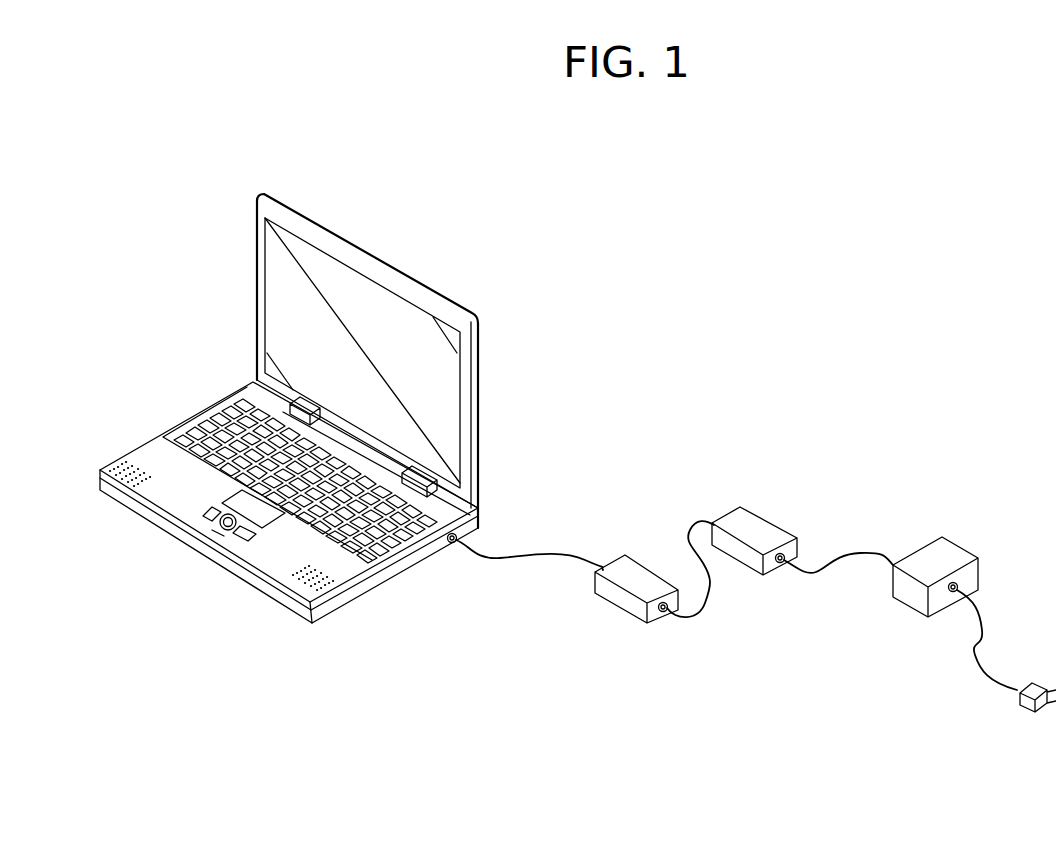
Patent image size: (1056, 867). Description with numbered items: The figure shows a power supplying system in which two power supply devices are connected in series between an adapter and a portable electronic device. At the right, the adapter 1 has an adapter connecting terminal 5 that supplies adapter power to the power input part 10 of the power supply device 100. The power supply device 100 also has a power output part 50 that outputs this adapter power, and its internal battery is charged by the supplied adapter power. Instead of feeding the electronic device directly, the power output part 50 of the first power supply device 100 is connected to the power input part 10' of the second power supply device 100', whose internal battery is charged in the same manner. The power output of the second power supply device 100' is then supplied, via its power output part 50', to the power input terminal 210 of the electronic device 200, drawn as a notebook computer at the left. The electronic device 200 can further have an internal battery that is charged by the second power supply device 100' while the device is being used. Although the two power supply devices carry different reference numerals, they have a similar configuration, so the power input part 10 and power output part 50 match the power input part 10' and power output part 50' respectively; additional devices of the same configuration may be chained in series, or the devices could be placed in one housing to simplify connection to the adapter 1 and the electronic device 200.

The electronic device 200 is at (478, 410).
The power input terminal 210 is at (449, 546).
The power output part 50' is at (529, 538).
The second power supply device 100' is at (610, 621).
The power input part 10' is at (649, 645).
The power output part 50 is at (678, 565).
The power supply device 100 is at (765, 561).
The power input part 10 is at (766, 596).
The adapter connecting terminal 5 is at (798, 542).
The adapter 1 is at (960, 550).